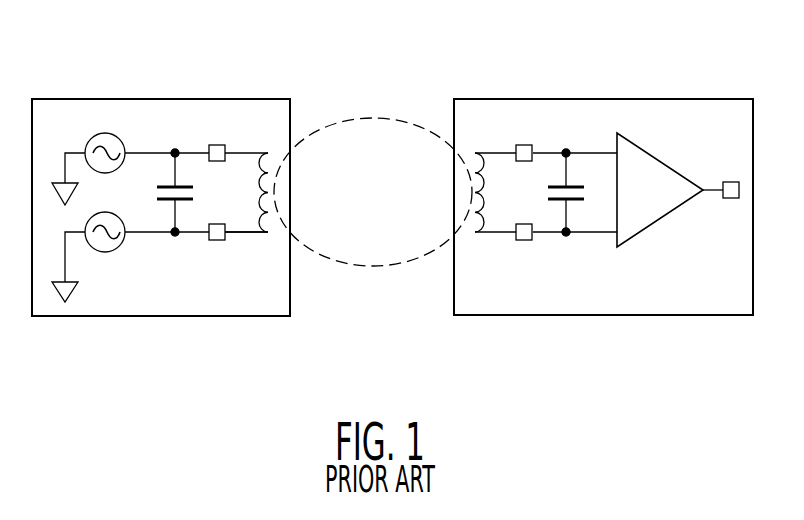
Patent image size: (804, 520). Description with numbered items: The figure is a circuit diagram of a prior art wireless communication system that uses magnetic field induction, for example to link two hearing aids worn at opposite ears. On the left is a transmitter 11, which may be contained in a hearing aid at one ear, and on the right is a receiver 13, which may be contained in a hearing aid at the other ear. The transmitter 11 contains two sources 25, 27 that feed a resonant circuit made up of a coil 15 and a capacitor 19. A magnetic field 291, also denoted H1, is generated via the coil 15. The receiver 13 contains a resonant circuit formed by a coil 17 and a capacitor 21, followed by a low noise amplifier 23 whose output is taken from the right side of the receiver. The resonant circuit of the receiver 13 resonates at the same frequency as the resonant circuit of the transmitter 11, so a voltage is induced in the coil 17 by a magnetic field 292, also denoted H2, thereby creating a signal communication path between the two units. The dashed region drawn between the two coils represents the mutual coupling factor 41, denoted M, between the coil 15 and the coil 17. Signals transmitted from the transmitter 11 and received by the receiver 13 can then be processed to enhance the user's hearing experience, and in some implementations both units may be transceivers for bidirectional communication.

The transmitter 11 is at (59, 99).
The receiver 13 is at (664, 99).
The coil 15 is at (268, 153).
The coil 17 is at (477, 153).
The capacitor 19 is at (192, 200).
The capacitor 21 is at (578, 203).
The low noise amplifier 23 is at (660, 221).
The source 25 is at (108, 252).
The source 27 is at (108, 133).
The magnetic field 291 is at (283, 233).
The magnetic field 292 is at (460, 235).
The mutual coupling factor 41 is at (372, 209).